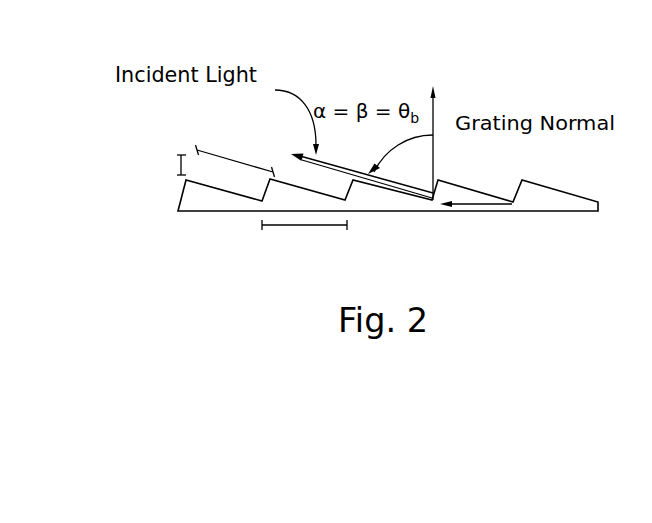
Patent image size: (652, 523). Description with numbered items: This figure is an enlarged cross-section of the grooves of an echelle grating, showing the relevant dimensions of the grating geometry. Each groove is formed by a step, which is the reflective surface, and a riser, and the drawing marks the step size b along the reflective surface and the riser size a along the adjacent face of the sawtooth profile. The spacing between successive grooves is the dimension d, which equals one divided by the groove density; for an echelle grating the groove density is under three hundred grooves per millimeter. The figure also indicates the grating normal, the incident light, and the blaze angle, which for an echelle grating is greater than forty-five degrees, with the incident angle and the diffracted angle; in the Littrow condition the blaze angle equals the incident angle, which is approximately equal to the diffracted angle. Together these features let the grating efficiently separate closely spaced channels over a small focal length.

The riser size a is at (235, 154).
The step size b is at (175, 162).
The groove spacing d is at (304, 236).